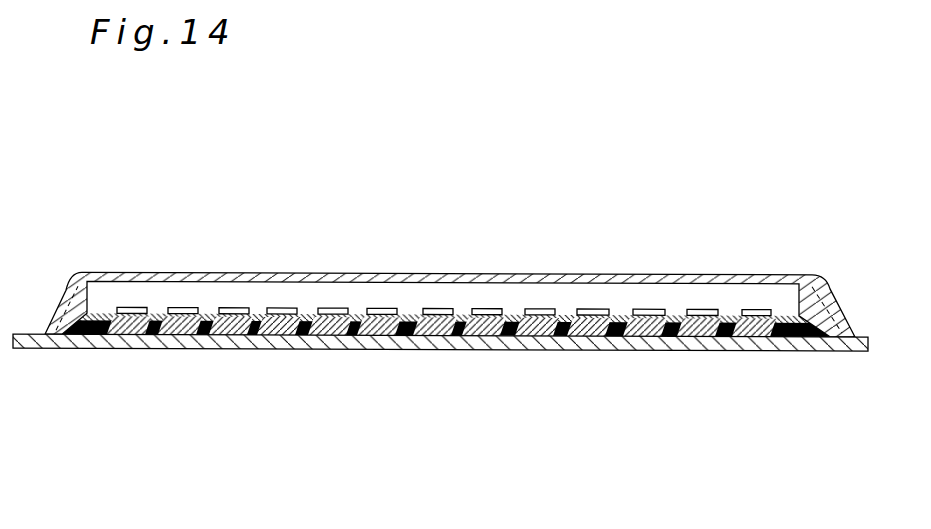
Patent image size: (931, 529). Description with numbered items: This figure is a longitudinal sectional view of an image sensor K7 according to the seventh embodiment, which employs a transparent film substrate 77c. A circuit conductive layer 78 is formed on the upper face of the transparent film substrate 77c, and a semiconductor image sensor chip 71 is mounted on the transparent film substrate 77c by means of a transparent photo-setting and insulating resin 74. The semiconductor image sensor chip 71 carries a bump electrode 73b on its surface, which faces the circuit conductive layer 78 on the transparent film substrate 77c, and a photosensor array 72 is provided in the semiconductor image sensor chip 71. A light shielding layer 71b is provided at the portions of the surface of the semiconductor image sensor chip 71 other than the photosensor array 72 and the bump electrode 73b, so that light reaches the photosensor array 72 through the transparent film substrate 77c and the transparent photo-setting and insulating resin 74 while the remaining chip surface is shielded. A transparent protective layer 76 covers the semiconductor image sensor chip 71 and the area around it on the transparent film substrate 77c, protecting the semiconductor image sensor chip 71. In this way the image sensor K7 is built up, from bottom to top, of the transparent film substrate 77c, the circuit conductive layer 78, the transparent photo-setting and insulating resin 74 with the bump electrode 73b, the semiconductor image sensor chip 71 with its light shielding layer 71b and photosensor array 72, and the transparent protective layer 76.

The image sensor K7 is at (237, 235).
The semiconductor image sensor chip 71 is at (680, 295).
The light shielding layer 71b is at (263, 330).
The photosensor array 72 is at (332, 315).
The bump electrode 73b is at (462, 317).
The transparent photo-setting and insulating resin 74 is at (533, 332).
The transparent protective layer 76 is at (573, 275).
The transparent film substrate 77c is at (777, 337).
The circuit conductive layer 78 is at (628, 335).